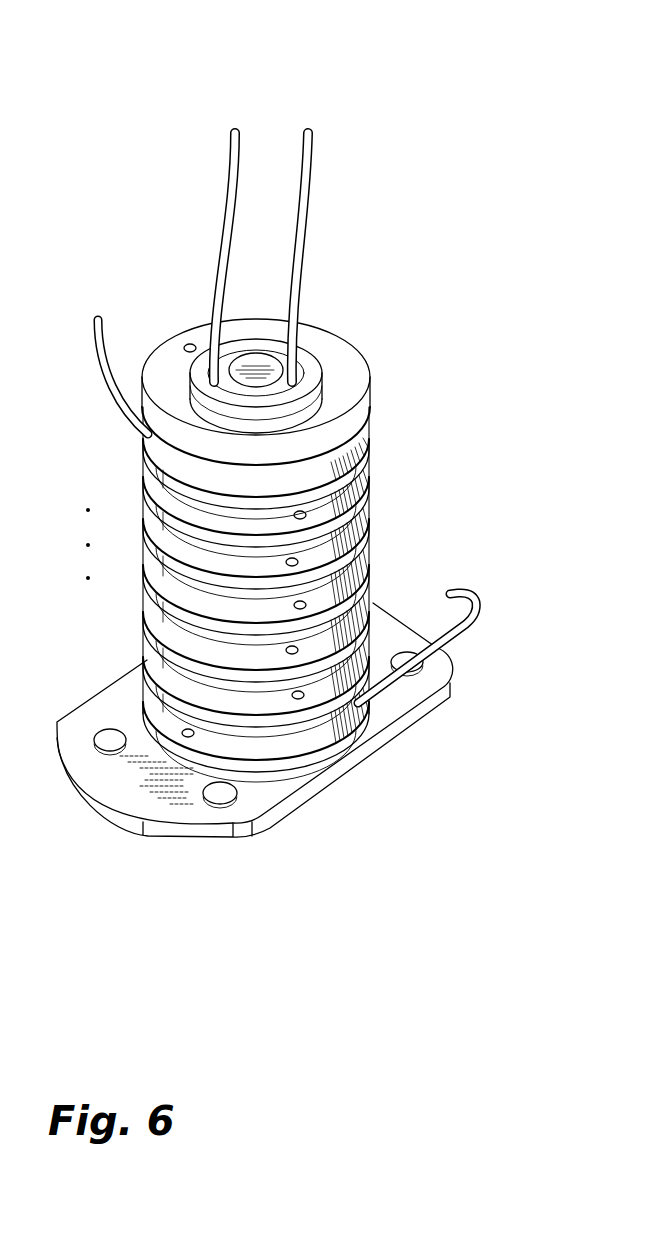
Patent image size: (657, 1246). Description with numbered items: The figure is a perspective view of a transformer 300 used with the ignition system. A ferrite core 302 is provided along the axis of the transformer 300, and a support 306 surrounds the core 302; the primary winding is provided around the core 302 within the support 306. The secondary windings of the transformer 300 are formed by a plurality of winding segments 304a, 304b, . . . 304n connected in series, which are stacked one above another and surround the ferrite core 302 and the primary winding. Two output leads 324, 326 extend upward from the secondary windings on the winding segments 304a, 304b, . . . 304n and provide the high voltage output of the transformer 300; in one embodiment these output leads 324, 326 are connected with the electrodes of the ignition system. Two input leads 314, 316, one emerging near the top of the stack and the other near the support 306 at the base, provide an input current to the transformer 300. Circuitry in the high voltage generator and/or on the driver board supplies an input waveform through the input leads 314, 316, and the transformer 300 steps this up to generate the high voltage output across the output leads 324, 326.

The transformer 300 is at (95, 185).
The ferrite core 302 is at (249, 351).
The winding segment 304a is at (108, 426).
The winding segment 304b is at (128, 501).
The winding segment 304n is at (132, 694).
The support 306 is at (346, 783).
The input lead 314 is at (106, 328).
The input lead 316 is at (472, 632).
The output lead 324 is at (316, 165).
The output lead 326 is at (227, 165).